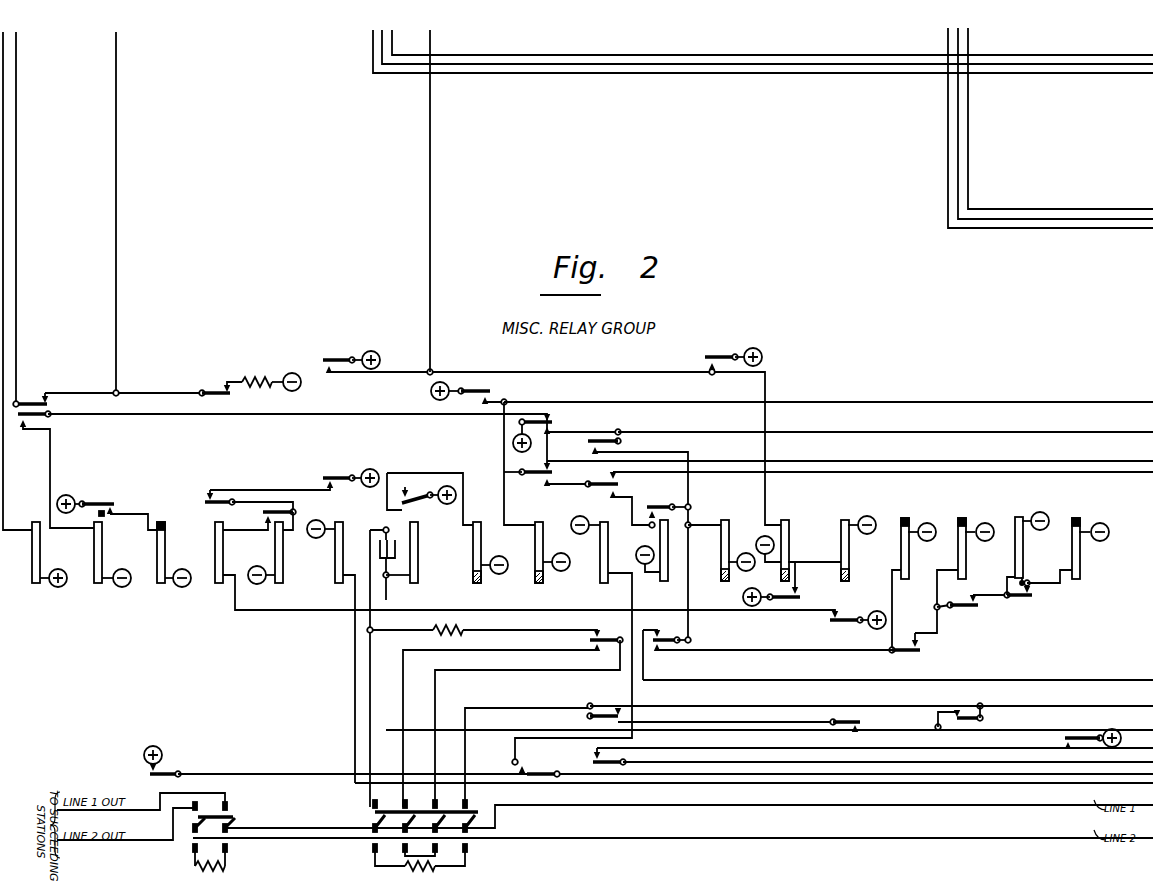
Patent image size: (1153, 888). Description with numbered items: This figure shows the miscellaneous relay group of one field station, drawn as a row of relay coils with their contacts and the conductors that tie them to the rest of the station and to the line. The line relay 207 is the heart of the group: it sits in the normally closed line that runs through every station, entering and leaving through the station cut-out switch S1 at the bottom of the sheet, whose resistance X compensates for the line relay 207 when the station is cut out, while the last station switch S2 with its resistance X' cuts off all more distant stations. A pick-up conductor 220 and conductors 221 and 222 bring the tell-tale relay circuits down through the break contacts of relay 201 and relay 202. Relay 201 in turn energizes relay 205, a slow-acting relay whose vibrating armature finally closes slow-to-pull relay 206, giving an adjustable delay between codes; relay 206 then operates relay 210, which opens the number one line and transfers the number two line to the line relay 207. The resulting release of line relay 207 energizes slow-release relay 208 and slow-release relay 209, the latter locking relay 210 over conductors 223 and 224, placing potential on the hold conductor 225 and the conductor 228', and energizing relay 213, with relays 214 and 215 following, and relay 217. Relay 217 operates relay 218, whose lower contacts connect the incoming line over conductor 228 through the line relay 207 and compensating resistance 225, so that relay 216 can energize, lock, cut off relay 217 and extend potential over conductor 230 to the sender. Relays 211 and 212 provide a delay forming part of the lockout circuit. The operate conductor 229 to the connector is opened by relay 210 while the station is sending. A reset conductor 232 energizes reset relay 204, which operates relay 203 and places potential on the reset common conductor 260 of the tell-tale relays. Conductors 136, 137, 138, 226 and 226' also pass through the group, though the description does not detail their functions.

The conductor 136 is at (643, 55).
The conductor 137 is at (690, 64).
The conductor 138 is at (736, 73).
The relay 201 is at (32, 548).
The relay 202 is at (215, 548).
The relay 203 is at (275, 548).
The reset relay 204 is at (335, 548).
The relay 205 is at (94, 548).
The slow-to-pull relay 206 is at (157, 548).
The line relay 207 is at (417, 548).
The slow-release relay 208 is at (481, 548).
The slow-release relay 209 is at (543, 548).
The relay 210 is at (600, 576).
The relay 211 is at (1022, 551).
The relay 212 is at (1079, 551).
The relay 213 is at (728, 548).
The relay 214 is at (788, 548).
The relay 215 is at (848, 551).
The relay 216 is at (660, 548).
The relay 217 is at (908, 551).
The relay 218 is at (965, 551).
The pick-up conductor 220 is at (16, 70).
The conductor 221 is at (116, 53).
The conductor 222 is at (3, 45).
The conductor 223 is at (1101, 762).
The conductor 224 is at (1120, 742).
The compensating resistance 225 is at (1098, 432).
The conductor 226 is at (769, 720).
The conductor 226' is at (850, 450).
The conductor 228 is at (871, 696).
The conductor 228' is at (828, 389).
The operate conductor 229 is at (1097, 472).
The conductor 230 is at (1098, 680).
The reset conductor 232 is at (1098, 781).
The reset common conductor 260 is at (430, 47).
The station cut-out switch S1 is at (426, 839).
The last station switch S2 is at (214, 845).
The resistance X is at (368, 876).
The resistance X' is at (169, 856).